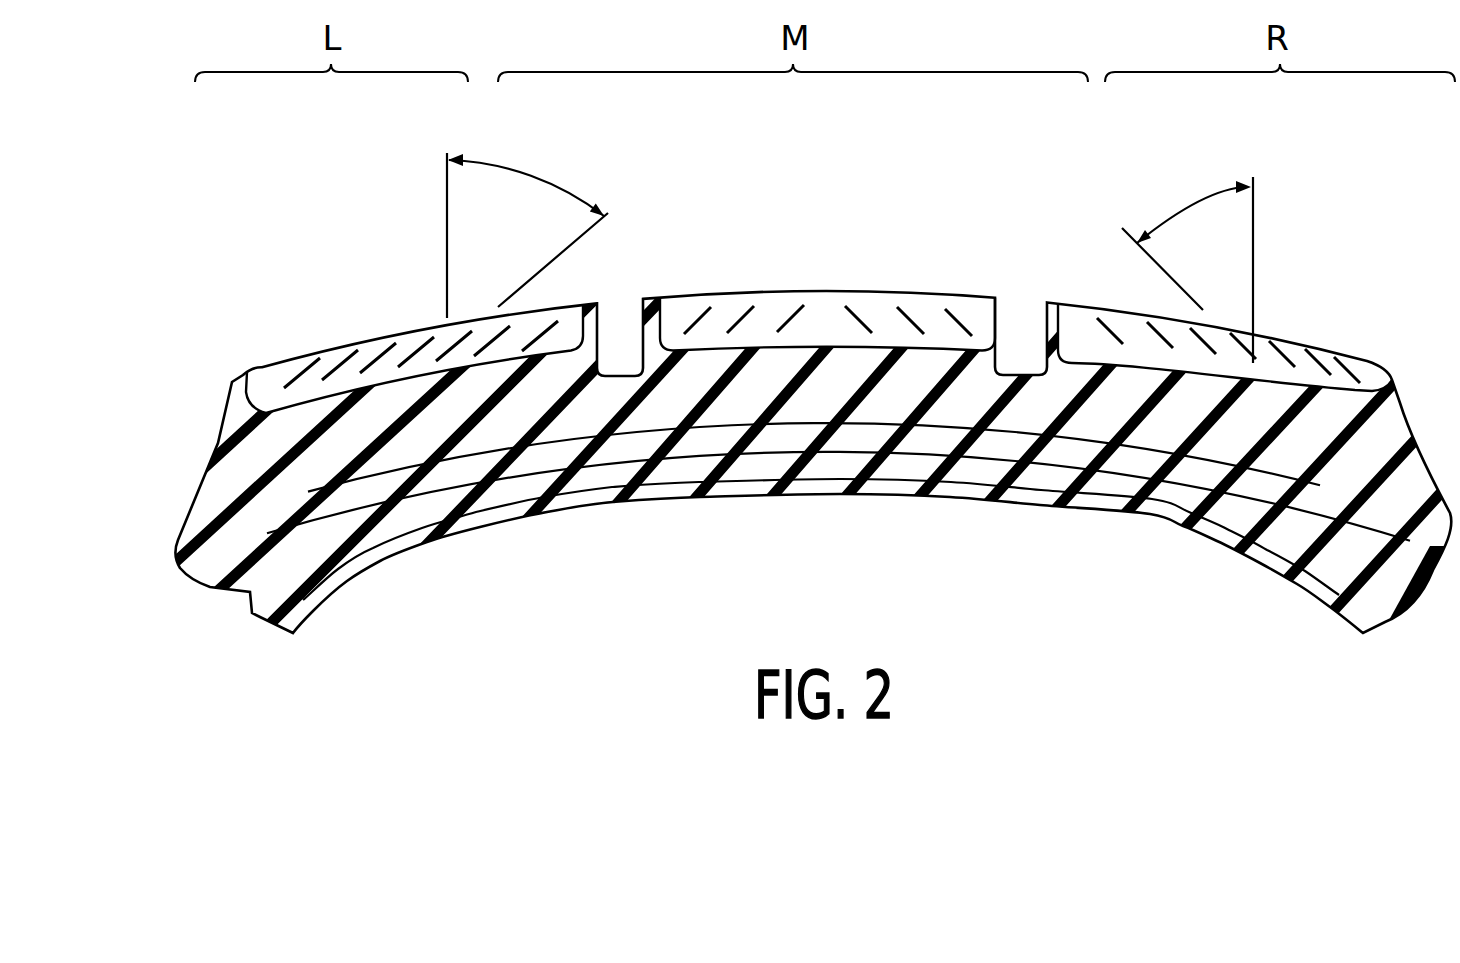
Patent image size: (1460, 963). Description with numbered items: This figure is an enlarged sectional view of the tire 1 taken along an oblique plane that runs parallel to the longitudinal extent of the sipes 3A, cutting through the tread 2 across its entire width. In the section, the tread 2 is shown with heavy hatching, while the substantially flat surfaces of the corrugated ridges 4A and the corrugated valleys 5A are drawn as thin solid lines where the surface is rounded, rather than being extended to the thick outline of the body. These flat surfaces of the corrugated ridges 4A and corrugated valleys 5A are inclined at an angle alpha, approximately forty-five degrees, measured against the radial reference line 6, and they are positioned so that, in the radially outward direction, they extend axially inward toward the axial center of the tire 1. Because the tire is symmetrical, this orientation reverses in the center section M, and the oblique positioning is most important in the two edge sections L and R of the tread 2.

The tire 1 is at (1393, 422).
The tread 2 is at (923, 372).
The sipes 3A is at (568, 328).
The corrugated ridges 4A is at (303, 368).
The corrugated valleys 5A is at (340, 362).
The radial reference line 6 is at (447, 247).